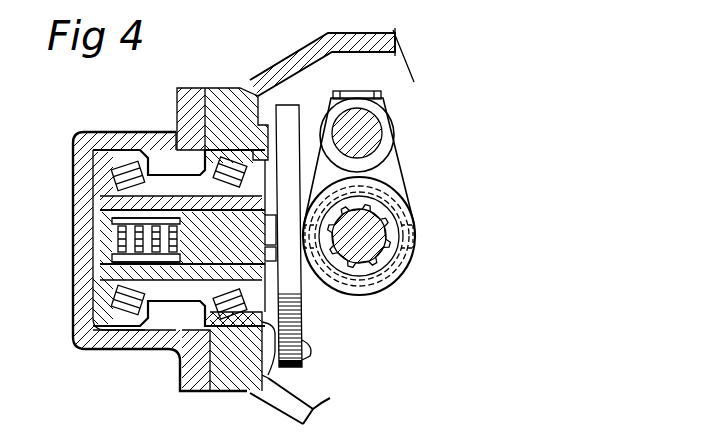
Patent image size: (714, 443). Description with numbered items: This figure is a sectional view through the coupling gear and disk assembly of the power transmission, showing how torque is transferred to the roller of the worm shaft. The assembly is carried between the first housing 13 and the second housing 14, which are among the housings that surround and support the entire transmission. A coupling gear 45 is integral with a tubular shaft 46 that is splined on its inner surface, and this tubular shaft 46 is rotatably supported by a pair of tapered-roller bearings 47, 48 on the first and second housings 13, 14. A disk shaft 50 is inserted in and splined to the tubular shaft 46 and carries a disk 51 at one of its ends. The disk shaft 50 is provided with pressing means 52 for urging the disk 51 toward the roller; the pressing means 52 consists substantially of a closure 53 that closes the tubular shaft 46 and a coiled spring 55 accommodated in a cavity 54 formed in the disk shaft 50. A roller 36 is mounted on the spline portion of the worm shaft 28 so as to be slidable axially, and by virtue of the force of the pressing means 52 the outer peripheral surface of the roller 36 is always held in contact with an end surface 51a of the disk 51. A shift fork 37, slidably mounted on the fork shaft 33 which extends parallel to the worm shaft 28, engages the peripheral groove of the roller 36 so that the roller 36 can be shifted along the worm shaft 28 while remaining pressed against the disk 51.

The first housing 13 is at (80, 291).
The second housing 14 is at (347, 40).
The worm shaft 28 is at (396, 232).
The fork shaft 33 is at (372, 126).
The roller 36 is at (402, 268).
The shift fork 37 is at (398, 162).
The coupling gear 45 is at (170, 317).
The tubular shaft 46 is at (276, 262).
The tapered-roller bearing 47 is at (92, 332).
The tapered-roller bearing 48 is at (277, 312).
The disk shaft 50 is at (186, 262).
The disk 51 is at (305, 364).
The end surface 51a is at (268, 386).
The pressing means 52 is at (110, 243).
The closure 53 is at (102, 258).
The cavity 54 is at (166, 225).
The coiled spring 55 is at (112, 222).